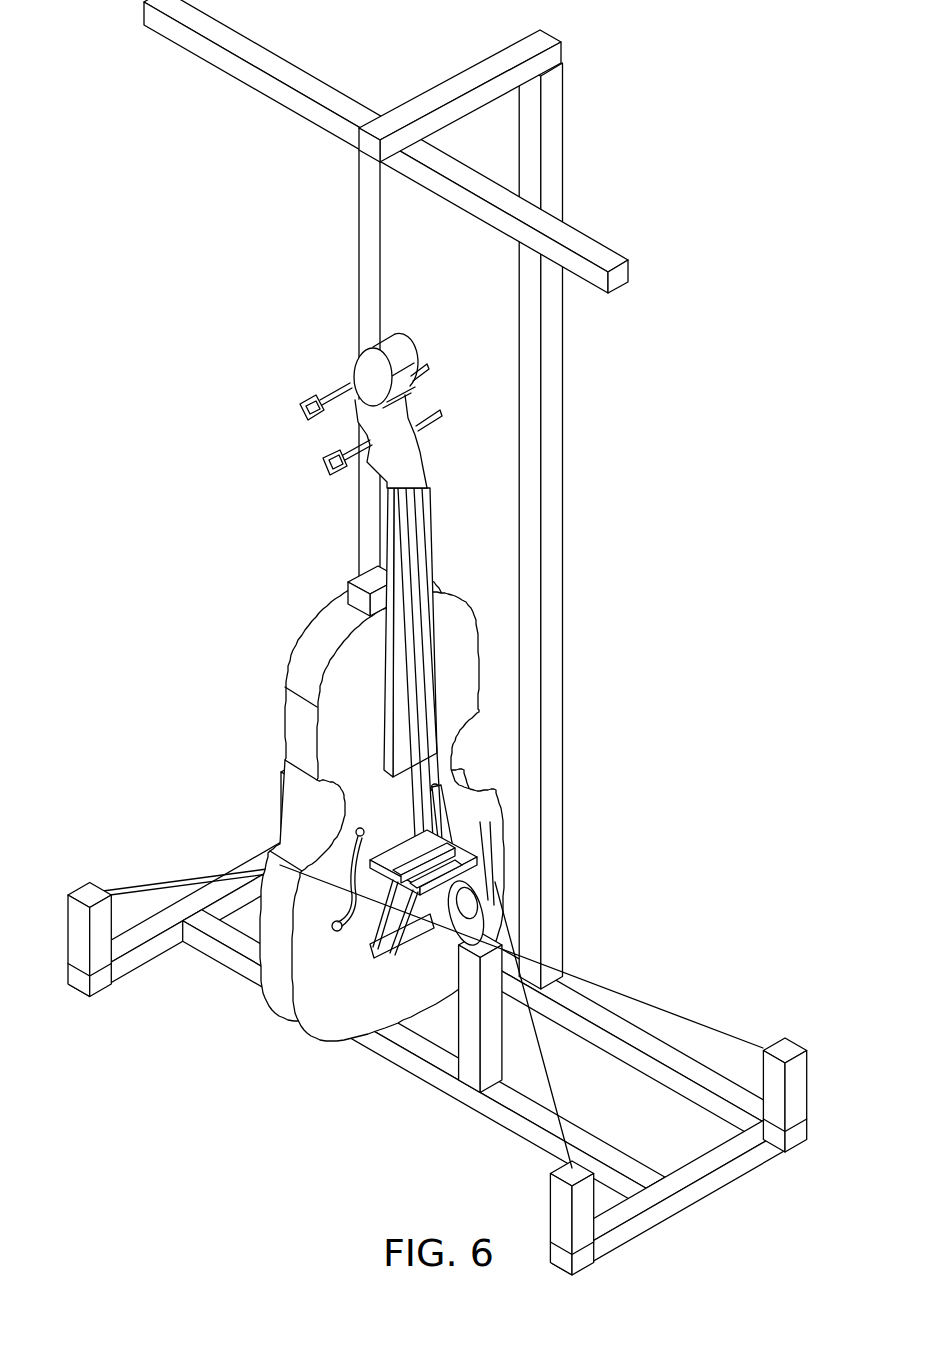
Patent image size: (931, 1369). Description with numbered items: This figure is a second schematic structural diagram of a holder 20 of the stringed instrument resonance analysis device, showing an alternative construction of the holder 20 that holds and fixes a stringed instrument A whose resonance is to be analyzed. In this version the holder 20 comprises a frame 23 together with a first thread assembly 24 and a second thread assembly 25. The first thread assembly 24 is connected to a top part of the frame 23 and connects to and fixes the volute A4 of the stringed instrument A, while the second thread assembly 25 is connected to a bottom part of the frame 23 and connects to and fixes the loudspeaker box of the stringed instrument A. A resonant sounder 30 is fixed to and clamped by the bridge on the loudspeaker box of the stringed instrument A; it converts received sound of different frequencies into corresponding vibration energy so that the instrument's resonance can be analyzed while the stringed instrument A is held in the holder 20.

The holder 20 is at (425, 636).
The frame 23 is at (565, 399).
The first thread assembly 24 is at (358, 256).
The second thread assembly 25 is at (425, 636).
The resonant sounder 30 is at (487, 875).
The stringed instrument A is at (348, 673).
The volute A4 is at (405, 345).